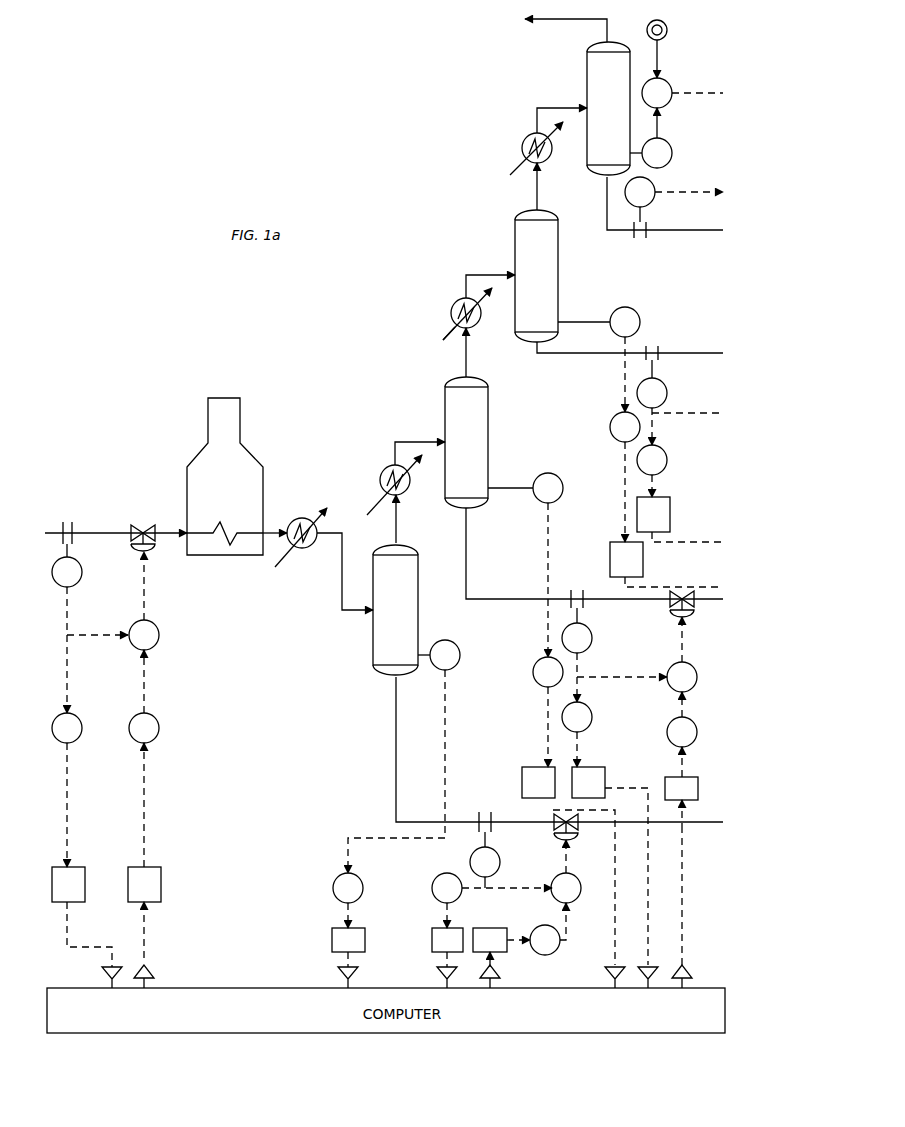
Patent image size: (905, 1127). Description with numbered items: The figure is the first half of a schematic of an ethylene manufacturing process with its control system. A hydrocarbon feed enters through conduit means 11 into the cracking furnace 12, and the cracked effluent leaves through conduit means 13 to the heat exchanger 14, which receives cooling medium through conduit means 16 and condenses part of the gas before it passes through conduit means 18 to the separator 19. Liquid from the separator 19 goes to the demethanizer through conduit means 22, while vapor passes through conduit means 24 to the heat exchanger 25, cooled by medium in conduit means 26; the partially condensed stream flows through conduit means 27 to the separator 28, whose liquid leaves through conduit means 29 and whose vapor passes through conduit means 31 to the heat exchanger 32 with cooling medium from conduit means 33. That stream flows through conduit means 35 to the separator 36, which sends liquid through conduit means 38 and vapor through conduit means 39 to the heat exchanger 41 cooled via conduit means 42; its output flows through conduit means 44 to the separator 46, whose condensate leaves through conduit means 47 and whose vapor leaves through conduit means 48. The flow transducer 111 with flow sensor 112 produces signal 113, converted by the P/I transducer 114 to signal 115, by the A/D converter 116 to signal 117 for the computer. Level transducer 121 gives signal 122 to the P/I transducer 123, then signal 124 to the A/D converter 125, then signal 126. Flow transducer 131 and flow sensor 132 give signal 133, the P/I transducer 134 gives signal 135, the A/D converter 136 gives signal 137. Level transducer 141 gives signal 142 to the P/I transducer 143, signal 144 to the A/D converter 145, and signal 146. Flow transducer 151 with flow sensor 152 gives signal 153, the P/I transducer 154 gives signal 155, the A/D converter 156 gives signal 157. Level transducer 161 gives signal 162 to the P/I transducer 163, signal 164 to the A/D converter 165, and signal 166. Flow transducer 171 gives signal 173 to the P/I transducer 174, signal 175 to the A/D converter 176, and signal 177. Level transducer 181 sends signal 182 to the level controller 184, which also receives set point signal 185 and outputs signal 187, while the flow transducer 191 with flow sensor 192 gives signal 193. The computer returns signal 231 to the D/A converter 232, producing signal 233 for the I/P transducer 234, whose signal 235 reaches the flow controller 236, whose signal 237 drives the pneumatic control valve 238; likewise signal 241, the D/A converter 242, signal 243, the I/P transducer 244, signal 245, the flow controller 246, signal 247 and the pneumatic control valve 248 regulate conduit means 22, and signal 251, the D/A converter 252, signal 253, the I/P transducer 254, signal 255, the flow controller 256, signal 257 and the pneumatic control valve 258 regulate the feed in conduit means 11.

The conduit means 11 is at (47, 529).
The cracking furnace 12 is at (216, 397).
The conduit means 13 is at (273, 532).
The heat exchanger 14 is at (302, 517).
The conduit means 16 is at (276, 567).
The conduit means 18 is at (345, 532).
The separator 19 is at (373, 639).
The conduit means 22 is at (708, 822).
The conduit means 24 is at (397, 526).
The heat exchanger 25 is at (392, 464).
The conduit means 26 is at (367, 516).
The conduit means 27 is at (406, 441).
The separator 28 is at (445, 403).
The conduit means 29 is at (708, 599).
The conduit means 31 is at (466, 358).
The heat exchanger 32 is at (451, 316).
The conduit means 33 is at (445, 337).
The conduit means 35 is at (465, 287).
The separator 36 is at (515, 243).
The conduit means 38 is at (712, 352).
The conduit means 39 is at (538, 191).
The heat exchanger 41 is at (521, 148).
The conduit means 42 is at (515, 172).
The conduit means 44 is at (536, 117).
The separator 46 is at (587, 78).
The conduit means 47 is at (695, 230).
The conduit means 48 is at (567, 23).
The flow transducer 111 is at (82, 571).
The flow sensor 112 is at (71, 524).
The output signal 113 is at (68, 606).
The pressure-to-current (P/I) transducer 114 is at (77, 715).
The signal 115 is at (67, 791).
The analog-to-digital (A/D) converter 116 is at (78, 866).
The signal 117 is at (67, 929).
The level transducer 121 is at (459, 654).
The output signal 122 is at (446, 717).
The P/I transducer 123 is at (332, 887).
The signal 124 is at (347, 911).
The A/D converter 125 is at (330, 939).
The signal 126 is at (347, 962).
The flow transducer 131 is at (469, 861).
The flow sensor 132 is at (483, 811).
The output signal 133 is at (485, 887).
The P/I transducer 134 is at (431, 887).
The signal 135 is at (445, 911).
The A/D converter 136 is at (429, 939).
The signal 137 is at (445, 962).
The level transducer 141 is at (544, 475).
The output signal 142 is at (546, 572).
The P/I transducer 143 is at (532, 671).
The signal 144 is at (547, 739).
The A/D converter 145 is at (522, 772).
The signal 146 is at (613, 945).
The flow transducer 151 is at (592, 637).
The flow sensor 152 is at (578, 589).
The output signal 153 is at (578, 666).
The P/I transducer 154 is at (593, 716).
The signal 155 is at (578, 744).
The A/D converter 156 is at (606, 772).
The signal 157 is at (649, 905).
The level transducer 161 is at (640, 321).
The output signal 162 is at (622, 378).
The P/I transducer 163 is at (606, 428).
The signal 164 is at (622, 482).
The A/D converter 165 is at (608, 551).
The signal 166 is at (692, 587).
The flow transducer 171 is at (667, 393).
The output signal 173 is at (656, 419).
The P/I transducer 174 is at (667, 459).
The signal 175 is at (654, 481).
The A/D converter 176 is at (670, 502).
The signal 177 is at (708, 543).
The level transducer 181 is at (672, 152).
The output signal 182 is at (660, 128).
The level controller 184 is at (672, 83).
The set point signal 185 is at (658, 49).
The output signal 187 is at (700, 93).
The flow transducer 191 is at (656, 182).
The flow sensor 192 is at (640, 242).
The output signal 193 is at (693, 196).
The signal 231 is at (670, 918).
The D/A converter 232 is at (678, 784).
The signal 233 is at (684, 777).
The I/P transducer 234 is at (680, 757).
The signal 235 is at (674, 724).
The flow controller 236 is at (680, 681).
The output signal 237 is at (681, 652).
The pneumatic control valve 238 is at (670, 610).
The signal 241 is at (492, 952).
The D/A converter 242 is at (476, 927).
The signal 243 is at (515, 936).
The I/P transducer 244 is at (533, 925).
The signal 245 is at (567, 933).
The flow controller 246 is at (552, 875).
The output signal 247 is at (566, 851).
The pneumatic control valve 248 is at (553, 811).
The signal 251 is at (145, 941).
The D/A converter 252 is at (162, 884).
The signal 253 is at (144, 806).
The I/P transducer 254 is at (159, 727).
The signal 255 is at (144, 686).
The flow controller 256 is at (159, 634).
The output signal 257 is at (144, 589).
The pneumatic control valve 258 is at (143, 527).